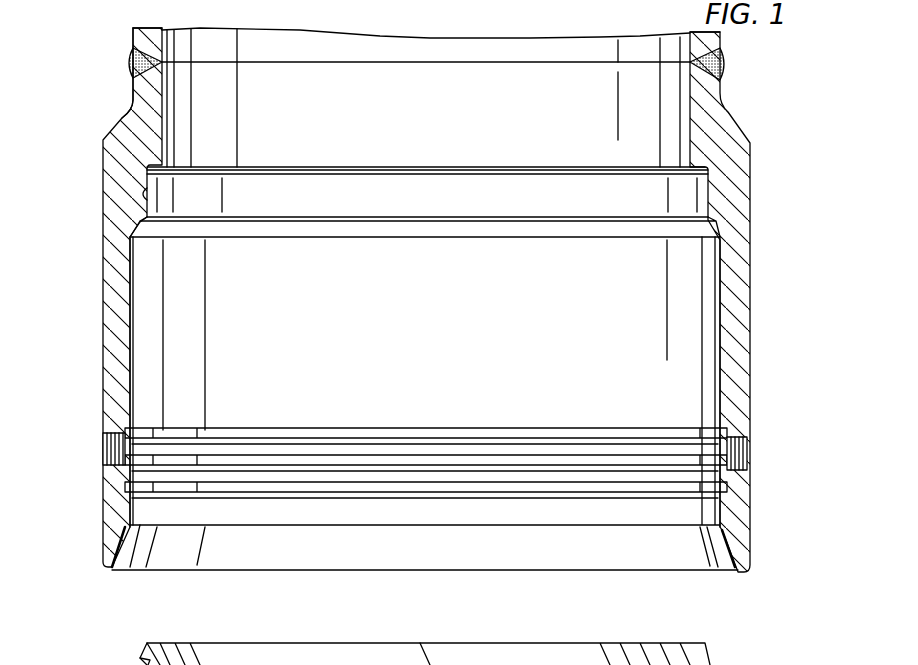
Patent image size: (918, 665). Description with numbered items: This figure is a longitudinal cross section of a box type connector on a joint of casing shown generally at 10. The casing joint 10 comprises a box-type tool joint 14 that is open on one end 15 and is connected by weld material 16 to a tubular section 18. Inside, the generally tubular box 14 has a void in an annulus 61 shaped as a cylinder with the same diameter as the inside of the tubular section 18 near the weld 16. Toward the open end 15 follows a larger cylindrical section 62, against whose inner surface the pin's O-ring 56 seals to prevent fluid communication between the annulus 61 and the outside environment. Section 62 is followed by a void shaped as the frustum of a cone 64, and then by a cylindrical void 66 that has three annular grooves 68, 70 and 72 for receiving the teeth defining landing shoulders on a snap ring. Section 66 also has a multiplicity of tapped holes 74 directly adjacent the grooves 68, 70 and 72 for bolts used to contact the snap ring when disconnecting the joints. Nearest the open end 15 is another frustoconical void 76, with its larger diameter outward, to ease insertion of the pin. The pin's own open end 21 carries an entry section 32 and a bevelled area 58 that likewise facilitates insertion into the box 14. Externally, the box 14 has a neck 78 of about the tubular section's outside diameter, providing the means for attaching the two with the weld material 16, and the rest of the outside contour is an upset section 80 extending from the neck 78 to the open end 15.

The casing joint 10 is at (79, 157).
The box-type tool joint 14 is at (695, 320).
The open end 15 is at (708, 577).
The weld material 16 is at (723, 66).
The tubular section 18 is at (353, 48).
The open end 21 is at (212, 641).
The entry section 32 is at (295, 655).
The O-ring 56 is at (143, 660).
The bevelled area 58 is at (147, 644).
The annulus 61 is at (452, 133).
The larger cylindrical section 62 is at (146, 198).
The frustum of a cone 64 is at (272, 228).
The cylindrical void 66 is at (131, 352).
The annular groove 68 is at (258, 432).
The annular groove 70 is at (318, 462).
The annular groove 72 is at (408, 492).
The tapped holes 74 is at (105, 452).
The void 76 is at (120, 568).
The neck 78 is at (132, 86).
The upset section 80 is at (103, 270).